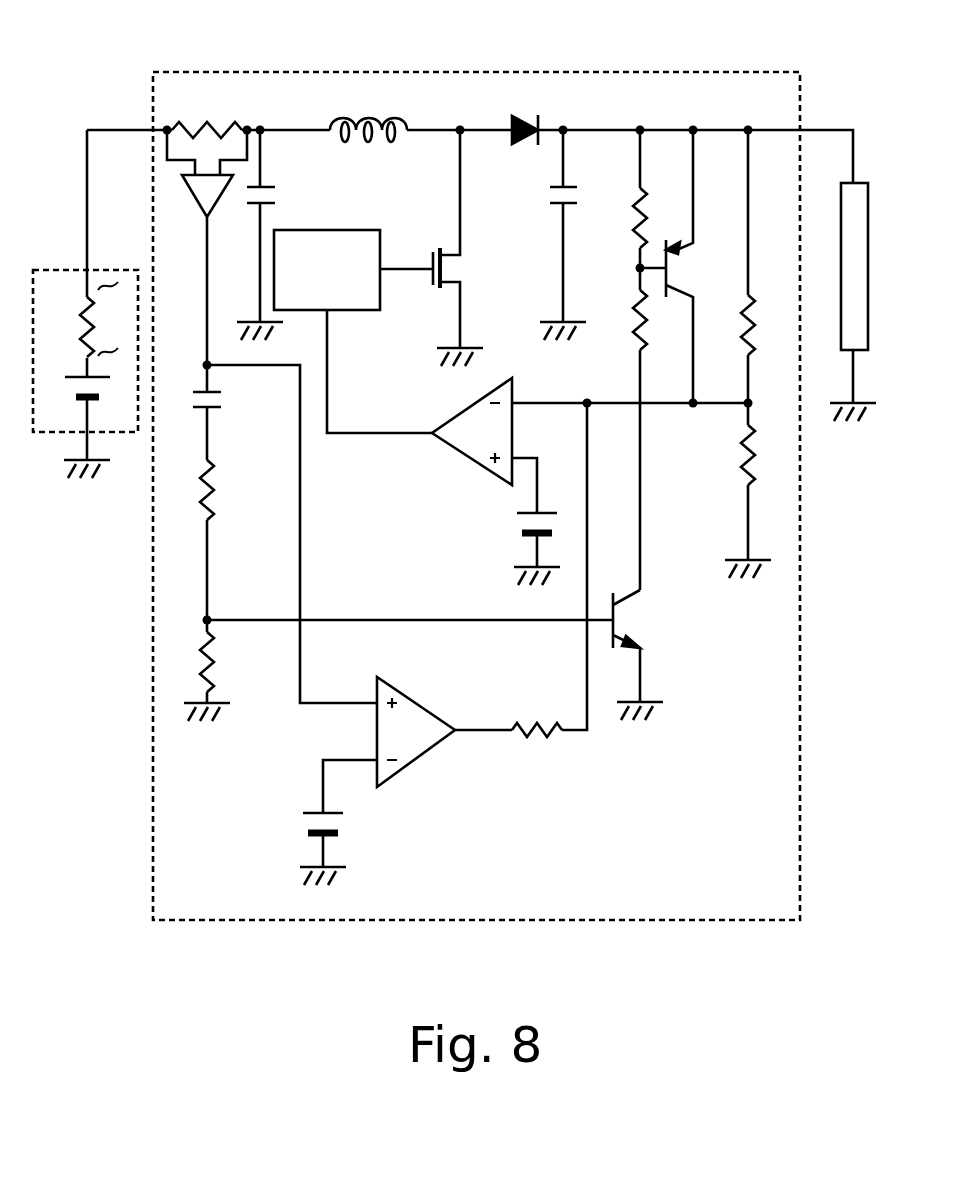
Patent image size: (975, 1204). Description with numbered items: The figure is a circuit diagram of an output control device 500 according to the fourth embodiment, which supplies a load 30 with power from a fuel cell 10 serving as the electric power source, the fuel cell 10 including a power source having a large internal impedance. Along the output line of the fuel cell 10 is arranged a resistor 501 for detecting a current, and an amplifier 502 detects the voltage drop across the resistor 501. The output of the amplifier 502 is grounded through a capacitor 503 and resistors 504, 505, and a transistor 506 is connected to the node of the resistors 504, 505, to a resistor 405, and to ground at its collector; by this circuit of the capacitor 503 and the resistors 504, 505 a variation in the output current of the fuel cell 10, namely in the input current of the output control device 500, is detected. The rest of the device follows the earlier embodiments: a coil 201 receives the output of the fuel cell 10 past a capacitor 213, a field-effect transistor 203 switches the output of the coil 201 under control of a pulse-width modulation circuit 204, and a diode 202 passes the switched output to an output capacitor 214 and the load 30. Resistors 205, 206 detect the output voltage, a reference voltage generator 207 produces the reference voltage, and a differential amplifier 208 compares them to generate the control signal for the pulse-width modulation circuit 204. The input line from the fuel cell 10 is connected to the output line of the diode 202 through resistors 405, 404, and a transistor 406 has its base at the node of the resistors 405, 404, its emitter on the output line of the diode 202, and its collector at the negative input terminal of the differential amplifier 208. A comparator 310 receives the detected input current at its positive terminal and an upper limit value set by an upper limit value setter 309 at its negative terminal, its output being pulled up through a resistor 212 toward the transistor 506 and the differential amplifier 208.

The output control device 500 is at (672, 72).
The fuel cell 10 is at (100, 270).
The load 30 is at (856, 183).
The resistor 501 is at (212, 127).
The amplifier 502 is at (203, 205).
The capacitor 503 is at (202, 390).
The resistor 504 is at (212, 478).
The resistor 505 is at (214, 642).
The transistor 506 is at (630, 620).
The coil 201 is at (380, 118).
The diode 202 is at (530, 117).
The field-effect transistor 203 is at (462, 265).
The pulse-width modulation circuit 204 is at (326, 230).
The resistor 205 is at (752, 310).
The resistor 206 is at (752, 440).
The reference voltage generator 207 is at (542, 511).
The differential amplifier 208 is at (470, 398).
The resistor 212 is at (537, 728).
The capacitor 213 is at (266, 186).
The capacitor 214 is at (568, 186).
The upper limit value setter 309 is at (305, 811).
The comparator 310 is at (420, 690).
The resistor 404 is at (643, 200).
The resistor 405 is at (644, 330).
The transistor 406 is at (672, 268).